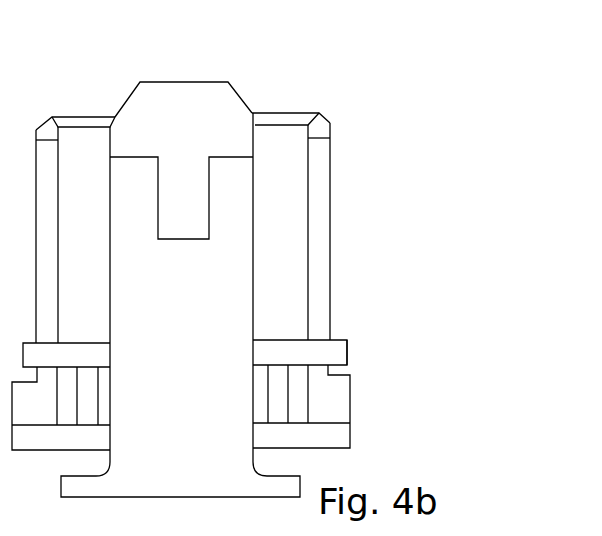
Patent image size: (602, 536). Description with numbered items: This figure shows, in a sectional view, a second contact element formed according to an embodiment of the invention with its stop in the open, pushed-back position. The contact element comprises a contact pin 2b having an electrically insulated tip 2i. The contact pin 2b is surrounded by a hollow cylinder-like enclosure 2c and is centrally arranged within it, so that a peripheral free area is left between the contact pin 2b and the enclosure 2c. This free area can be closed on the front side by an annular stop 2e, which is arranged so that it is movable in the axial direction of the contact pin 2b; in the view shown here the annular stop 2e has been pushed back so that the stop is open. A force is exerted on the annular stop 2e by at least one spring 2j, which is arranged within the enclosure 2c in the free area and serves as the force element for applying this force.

The electrically insulated tip 2i is at (168, 102).
The contact pin 2b is at (238, 193).
The enclosure 2c is at (331, 193).
The annular stop 2e is at (325, 350).
The spring 2j is at (282, 403).